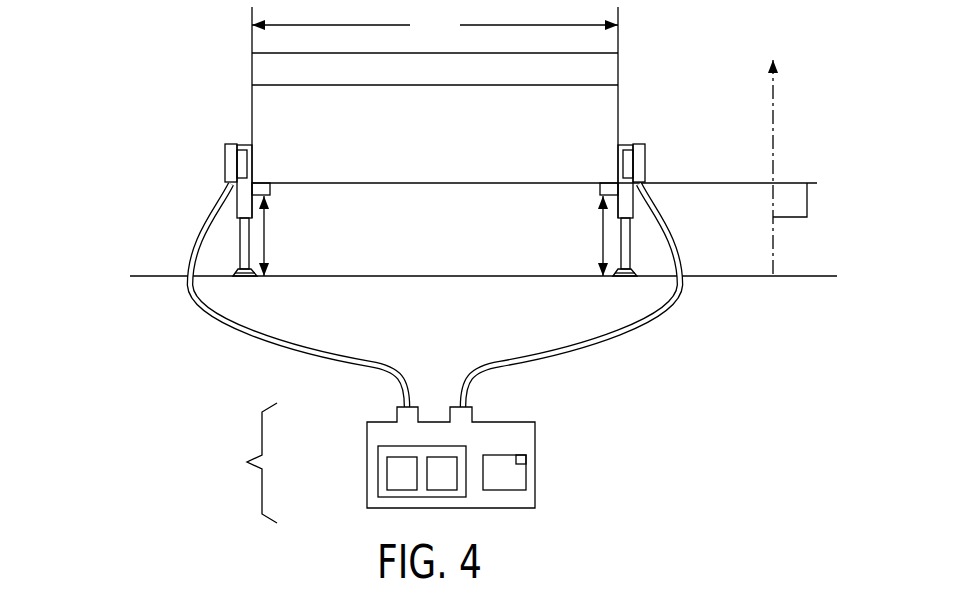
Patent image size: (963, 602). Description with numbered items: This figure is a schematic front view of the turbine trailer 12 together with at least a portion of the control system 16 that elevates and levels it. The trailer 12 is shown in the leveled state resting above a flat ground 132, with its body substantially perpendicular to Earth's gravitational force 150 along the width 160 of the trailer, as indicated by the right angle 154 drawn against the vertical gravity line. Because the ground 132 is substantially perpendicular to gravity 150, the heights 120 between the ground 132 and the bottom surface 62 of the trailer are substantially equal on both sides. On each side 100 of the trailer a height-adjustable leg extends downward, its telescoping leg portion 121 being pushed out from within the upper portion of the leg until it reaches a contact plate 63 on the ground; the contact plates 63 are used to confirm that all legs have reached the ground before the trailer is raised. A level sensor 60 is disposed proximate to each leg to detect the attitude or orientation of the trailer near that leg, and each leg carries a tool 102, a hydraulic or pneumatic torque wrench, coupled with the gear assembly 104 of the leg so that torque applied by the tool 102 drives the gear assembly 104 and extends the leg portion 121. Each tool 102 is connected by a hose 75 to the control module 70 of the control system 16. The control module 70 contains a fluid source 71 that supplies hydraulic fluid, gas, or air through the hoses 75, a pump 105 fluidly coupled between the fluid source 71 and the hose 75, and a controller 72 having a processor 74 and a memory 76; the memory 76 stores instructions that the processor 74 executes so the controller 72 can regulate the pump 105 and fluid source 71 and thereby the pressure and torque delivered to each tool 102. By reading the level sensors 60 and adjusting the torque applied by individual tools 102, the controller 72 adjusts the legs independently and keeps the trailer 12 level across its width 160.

The turbine trailer 12 is at (664, 43).
The control system 16 is at (248, 463).
The level sensor 60 is at (262, 188).
The bottom surface 62 is at (343, 184).
The contact plate 63 is at (243, 278).
The control module 70 is at (368, 467).
The fluid source 71 is at (527, 473).
The controller 72 is at (420, 446).
The processor 74 is at (400, 491).
The hose 75 is at (192, 250).
The memory 76 is at (443, 491).
The side 100 is at (243, 97).
The tool 102 is at (226, 152).
The gear assembly 104 is at (238, 147).
The pump 105 is at (524, 458).
The height 120 is at (266, 235).
The piston rod 121 is at (228, 248).
The ground 132 is at (343, 277).
The Earth's gravitational force 150 is at (775, 138).
The right angle 154 is at (793, 220).
The width 160 is at (435, 25).